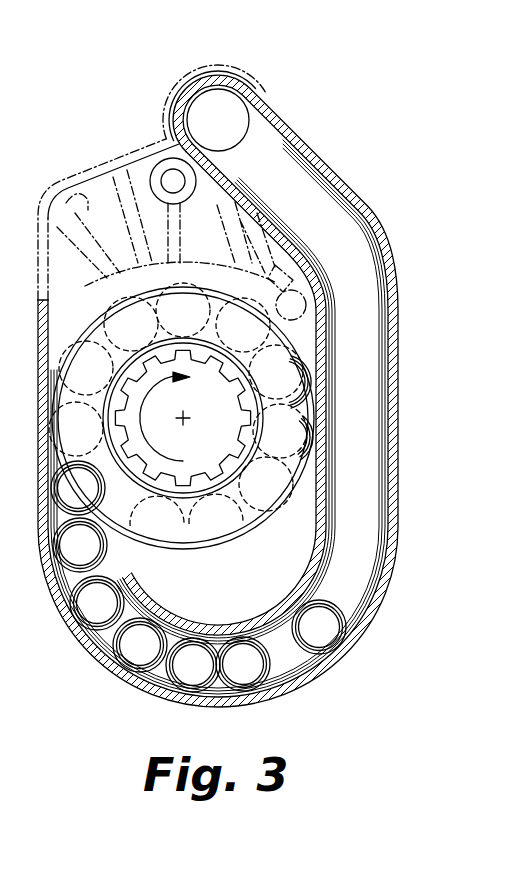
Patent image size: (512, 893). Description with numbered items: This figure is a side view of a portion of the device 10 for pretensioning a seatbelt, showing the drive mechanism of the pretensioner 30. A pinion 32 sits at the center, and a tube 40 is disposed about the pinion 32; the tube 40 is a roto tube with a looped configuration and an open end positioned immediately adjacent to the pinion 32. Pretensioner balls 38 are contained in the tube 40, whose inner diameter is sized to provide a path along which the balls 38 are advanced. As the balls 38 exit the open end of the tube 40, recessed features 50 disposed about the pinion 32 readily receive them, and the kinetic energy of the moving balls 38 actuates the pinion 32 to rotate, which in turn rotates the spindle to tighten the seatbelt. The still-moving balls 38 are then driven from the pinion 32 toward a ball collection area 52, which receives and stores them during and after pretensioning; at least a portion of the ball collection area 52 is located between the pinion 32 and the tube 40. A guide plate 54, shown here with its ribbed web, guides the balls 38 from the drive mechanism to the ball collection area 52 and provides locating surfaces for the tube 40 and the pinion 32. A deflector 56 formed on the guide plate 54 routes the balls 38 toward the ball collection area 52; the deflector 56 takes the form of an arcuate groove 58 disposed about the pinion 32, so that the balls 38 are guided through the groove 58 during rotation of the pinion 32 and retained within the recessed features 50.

The device 10 is at (301, 89).
The pretensioner 30 is at (383, 173).
The pinion 32 is at (311, 357).
The pretensioner balls 38 is at (311, 440).
The tube 40 is at (353, 280).
The recessed features 50 is at (243, 472).
The ball collection area 52 is at (234, 593).
The guide plate 54 is at (83, 190).
The deflector 56 is at (100, 300).
The arcuate groove 58 is at (147, 300).